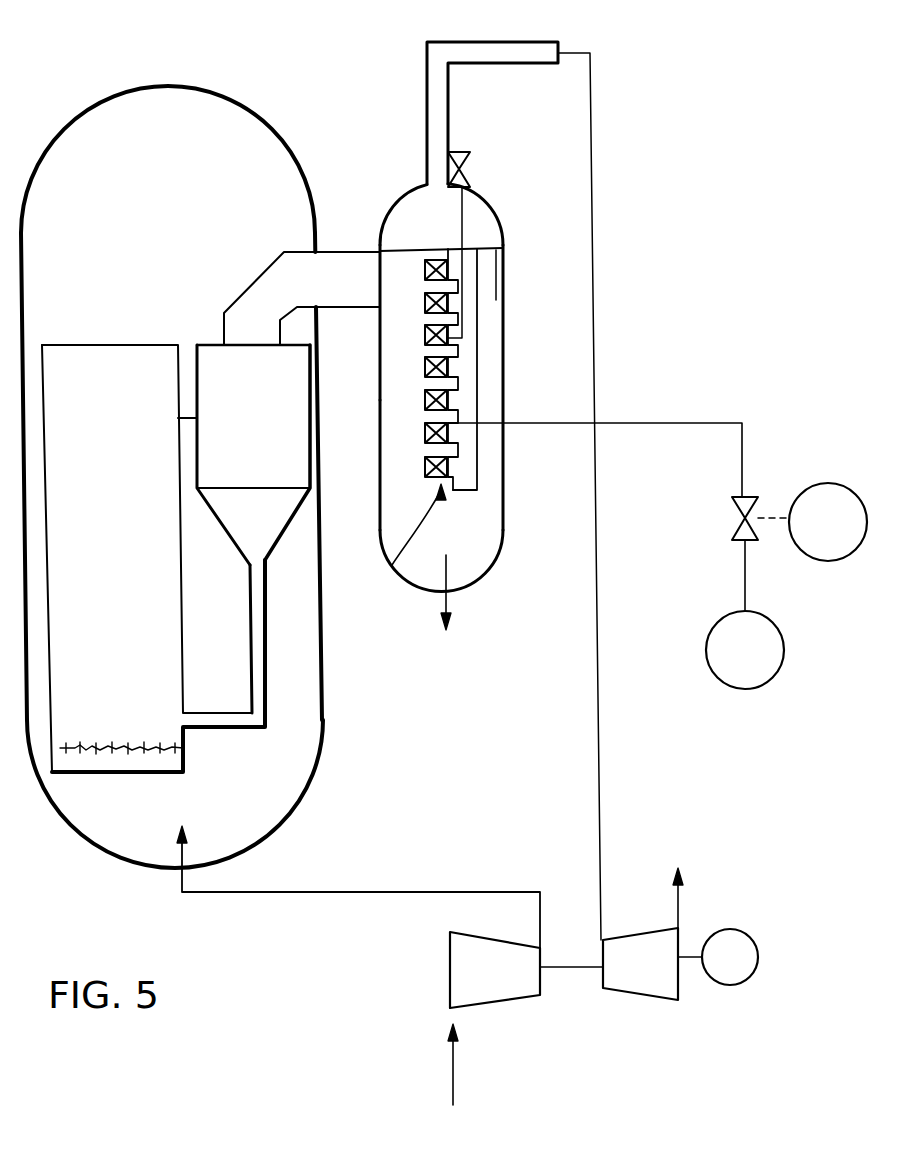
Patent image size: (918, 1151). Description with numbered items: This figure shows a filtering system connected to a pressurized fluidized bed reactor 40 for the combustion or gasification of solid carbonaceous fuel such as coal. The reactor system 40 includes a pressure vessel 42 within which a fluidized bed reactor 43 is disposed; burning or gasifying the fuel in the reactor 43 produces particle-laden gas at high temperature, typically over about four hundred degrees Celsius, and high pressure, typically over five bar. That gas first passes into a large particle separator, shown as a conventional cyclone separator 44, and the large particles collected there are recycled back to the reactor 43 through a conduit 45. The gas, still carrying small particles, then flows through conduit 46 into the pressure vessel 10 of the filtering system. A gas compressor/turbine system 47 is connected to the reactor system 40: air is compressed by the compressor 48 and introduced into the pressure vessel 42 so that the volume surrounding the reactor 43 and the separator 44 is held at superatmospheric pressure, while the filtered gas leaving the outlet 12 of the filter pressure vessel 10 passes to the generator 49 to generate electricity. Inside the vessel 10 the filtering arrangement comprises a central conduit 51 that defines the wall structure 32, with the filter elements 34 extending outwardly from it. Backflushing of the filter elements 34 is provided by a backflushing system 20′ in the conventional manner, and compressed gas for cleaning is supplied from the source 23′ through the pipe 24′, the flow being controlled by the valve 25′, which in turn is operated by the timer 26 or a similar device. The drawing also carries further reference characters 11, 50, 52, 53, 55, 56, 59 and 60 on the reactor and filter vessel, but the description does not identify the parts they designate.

The pressurized fluidized bed reactor 40 is at (108, 94).
The pressure vessel 42 is at (197, 88).
The fluidized bed reactor 43 is at (100, 362).
The cyclone separator 44 is at (218, 362).
The conduit 45 is at (265, 695).
The conduit 46 is at (330, 250).
The gas compressor/turbine system 47 is at (575, 1014).
The compressor 48 is at (456, 960).
The generator 49 is at (624, 939).
The upper zone 50 is at (412, 289).
The central conduit 51 is at (442, 128).
The outlet flow 52 is at (450, 600).
The inlet flow 53 is at (468, 544).
The heat exchanger elements 55 is at (424, 400).
The inner tube 56 is at (498, 296).
The lower zone 59 is at (386, 535).
The support plate 60 is at (430, 248).
The pressure vessel 10 is at (505, 422).
The vessel wall 11 is at (374, 300).
The outlet 12 is at (468, 52).
The backflushing system 20′ is at (474, 196).
The source 23′ is at (756, 622).
The pipe 24′ is at (696, 423).
The valve 25′ is at (753, 496).
The timer 26 is at (840, 460).
The wall structure 32 is at (468, 472).
The filter elements 34 is at (396, 562).